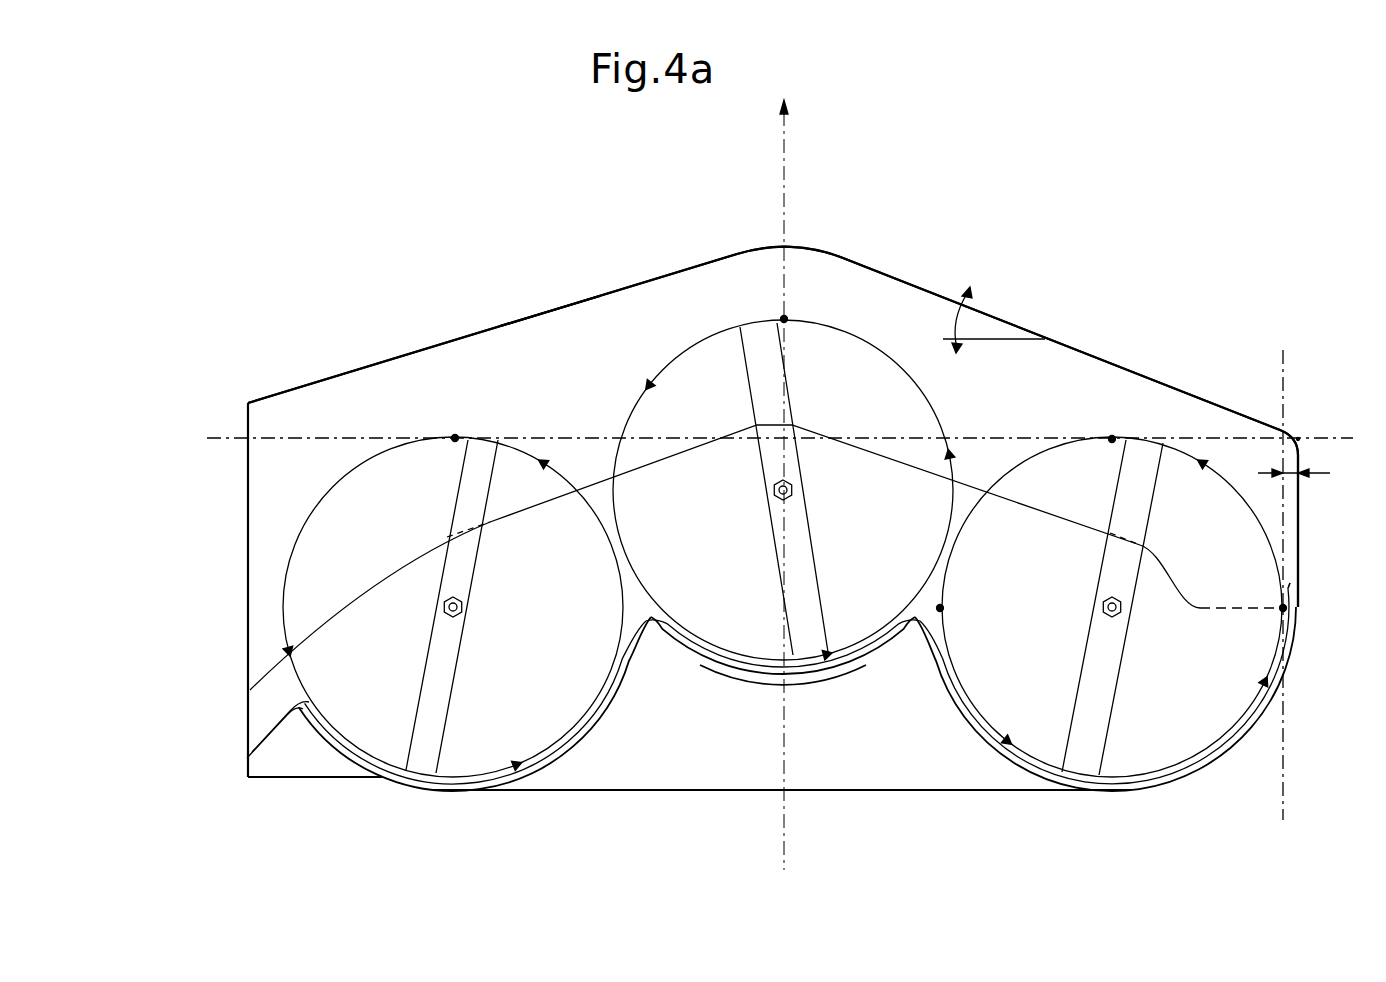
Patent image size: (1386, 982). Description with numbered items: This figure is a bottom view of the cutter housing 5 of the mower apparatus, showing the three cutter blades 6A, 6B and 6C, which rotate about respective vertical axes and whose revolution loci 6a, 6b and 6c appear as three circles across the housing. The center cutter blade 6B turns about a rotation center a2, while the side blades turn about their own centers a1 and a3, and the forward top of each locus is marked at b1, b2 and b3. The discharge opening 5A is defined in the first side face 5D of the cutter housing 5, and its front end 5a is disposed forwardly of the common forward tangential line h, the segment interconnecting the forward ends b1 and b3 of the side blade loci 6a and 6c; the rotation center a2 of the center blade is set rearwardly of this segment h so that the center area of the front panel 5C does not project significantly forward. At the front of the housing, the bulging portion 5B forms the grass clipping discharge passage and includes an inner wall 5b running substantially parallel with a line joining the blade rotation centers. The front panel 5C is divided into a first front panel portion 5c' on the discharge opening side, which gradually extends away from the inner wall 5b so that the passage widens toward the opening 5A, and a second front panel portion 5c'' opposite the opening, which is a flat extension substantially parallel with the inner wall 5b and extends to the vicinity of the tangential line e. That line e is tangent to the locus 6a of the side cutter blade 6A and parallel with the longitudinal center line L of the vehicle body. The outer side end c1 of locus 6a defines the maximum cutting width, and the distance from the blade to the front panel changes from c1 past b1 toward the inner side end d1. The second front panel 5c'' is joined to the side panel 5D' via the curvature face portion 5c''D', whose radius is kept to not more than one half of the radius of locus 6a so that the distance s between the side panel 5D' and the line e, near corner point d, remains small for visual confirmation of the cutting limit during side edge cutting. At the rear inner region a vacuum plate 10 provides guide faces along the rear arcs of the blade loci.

The cutter housing 5 is at (940, 250).
The discharge opening 5A is at (244, 530).
The bulging portion 5B is at (608, 322).
The front panel 5C is at (851, 245).
The first side face 5D is at (272, 739).
The side panel 5D' is at (1337, 531).
The front end of the discharge opening 5a is at (249, 402).
The inner wall 5b is at (497, 518).
The first front panel portion 5c' is at (492, 328).
The second front panel portion 5c'' is at (1061, 344).
The curvature face portion 5c''D' is at (1329, 401).
The side cutter blade 6A is at (1103, 686).
The center cutter blade 6B is at (790, 545).
The side cutter blade 6C is at (455, 687).
The revolution locus of side cutter blade 6A 6a is at (962, 708).
The revolution locus of center cutter blade 6B 6b is at (742, 655).
The revolution locus of side cutter blade 6C 6c is at (592, 704).
The vacuum plate 10 is at (823, 652).
The longitudinal center line of the vehicle body L is at (785, 201).
The right pivot nut a1 is at (1122, 609).
The rotation center of the center cutter blade a2 is at (792, 490).
The left pivot nut a3 is at (462, 608).
The forward top of the locus b1 is at (1112, 438).
The center circle top point b2 is at (785, 319).
The forward end of the side cutter blade locus b3 is at (455, 437).
The outer side end of the locus c1 is at (1284, 609).
The corner point d is at (1300, 440).
The inner side end of the locus d1 is at (942, 608).
The tangential line e is at (1285, 742).
The common forward tangential line h is at (571, 437).
The distance between side panel and tangential line s is at (1303, 470).